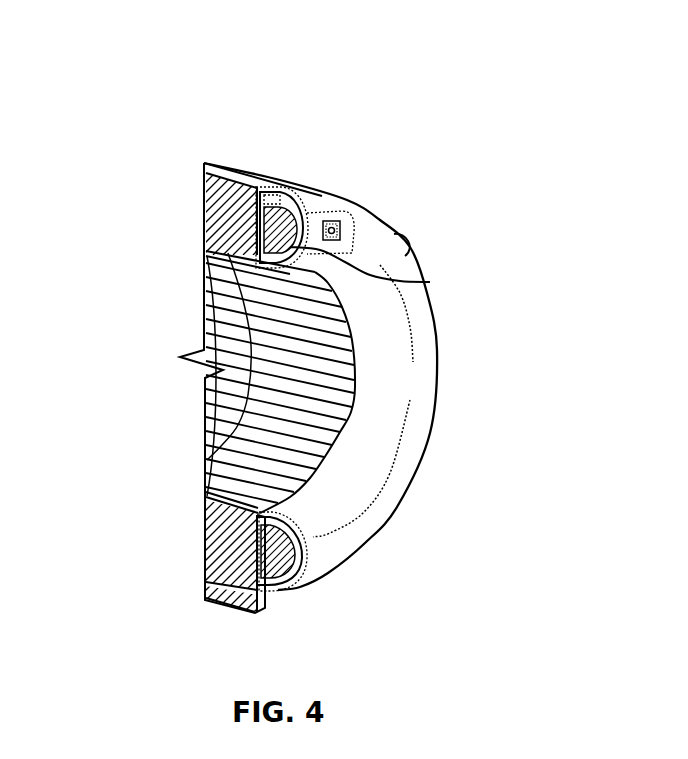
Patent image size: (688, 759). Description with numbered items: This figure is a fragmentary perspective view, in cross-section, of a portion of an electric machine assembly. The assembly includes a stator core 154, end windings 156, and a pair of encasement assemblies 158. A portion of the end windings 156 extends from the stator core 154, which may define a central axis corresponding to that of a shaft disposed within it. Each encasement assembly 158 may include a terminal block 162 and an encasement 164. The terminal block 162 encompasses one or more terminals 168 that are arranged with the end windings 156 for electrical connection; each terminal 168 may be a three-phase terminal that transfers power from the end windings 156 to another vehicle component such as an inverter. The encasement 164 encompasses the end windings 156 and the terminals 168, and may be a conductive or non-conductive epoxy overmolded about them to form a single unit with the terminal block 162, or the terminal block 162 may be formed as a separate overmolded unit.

The stator core 154 is at (243, 168).
The end windings 156 is at (273, 215).
The encasement assembly 158 is at (343, 195).
The terminal block 162 is at (357, 217).
The encasement 164 is at (440, 345).
The terminal 168 is at (339, 240).